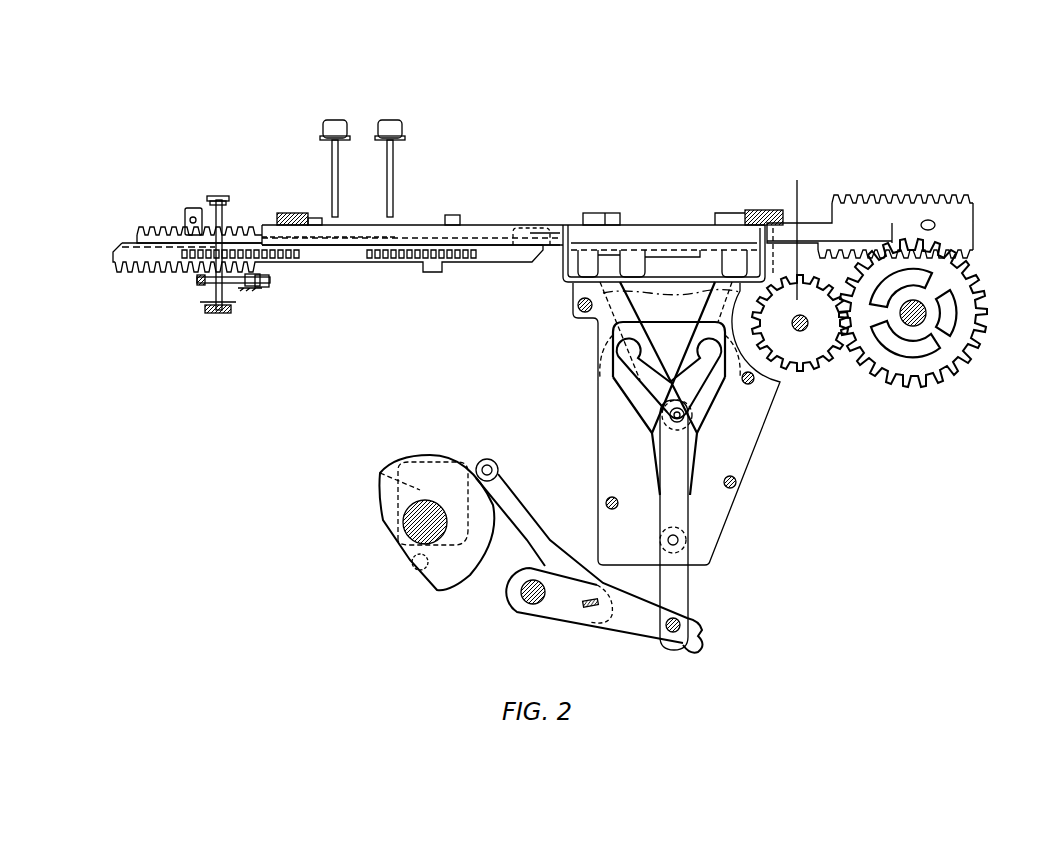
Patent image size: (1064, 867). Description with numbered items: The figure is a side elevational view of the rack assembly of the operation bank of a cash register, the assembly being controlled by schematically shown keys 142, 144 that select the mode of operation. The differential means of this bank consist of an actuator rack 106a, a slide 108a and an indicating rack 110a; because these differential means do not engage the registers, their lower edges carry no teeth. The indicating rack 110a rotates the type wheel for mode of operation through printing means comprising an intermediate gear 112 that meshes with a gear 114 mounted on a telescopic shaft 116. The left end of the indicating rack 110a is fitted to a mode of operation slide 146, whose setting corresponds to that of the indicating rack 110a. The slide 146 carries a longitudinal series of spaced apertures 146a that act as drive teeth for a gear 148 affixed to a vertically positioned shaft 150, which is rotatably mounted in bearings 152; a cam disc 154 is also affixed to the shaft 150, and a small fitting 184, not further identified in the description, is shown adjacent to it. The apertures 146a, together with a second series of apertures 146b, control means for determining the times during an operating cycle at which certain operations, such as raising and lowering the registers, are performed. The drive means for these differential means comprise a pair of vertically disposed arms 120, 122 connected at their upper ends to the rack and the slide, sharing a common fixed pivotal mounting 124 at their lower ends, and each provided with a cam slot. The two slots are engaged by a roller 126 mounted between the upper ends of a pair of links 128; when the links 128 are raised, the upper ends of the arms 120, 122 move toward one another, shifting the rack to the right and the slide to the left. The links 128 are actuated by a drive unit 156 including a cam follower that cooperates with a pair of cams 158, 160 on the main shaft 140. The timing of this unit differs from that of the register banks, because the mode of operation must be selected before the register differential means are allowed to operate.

The actuator rack 106a is at (150, 232).
The slide 108a is at (345, 237).
The indicating rack 110a is at (960, 215).
The intermediate gear 112 is at (913, 272).
The gear 114 is at (795, 228).
The telescopic shaft 116 is at (803, 326).
The arm 120 is at (642, 357).
The arm 122 is at (703, 395).
The lower pivot pin 124 is at (678, 541).
The roller 126 is at (684, 418).
The links 128 is at (680, 452).
The main shaft 140 is at (420, 527).
The key 142 is at (333, 128).
The key 144 is at (389, 128).
The mode of operation slide 146 is at (120, 258).
The apertures 146a is at (299, 259).
The ratchet portion of slide bar 146b is at (479, 256).
The gear 148 is at (200, 258).
The shaft 150 is at (222, 226).
The bearings 152 is at (221, 197).
The cam disc 154 is at (200, 280).
The drive unit 156 is at (565, 612).
The cam 158 is at (390, 465).
The cam 160 is at (392, 490).
The set screw 184 is at (263, 287).